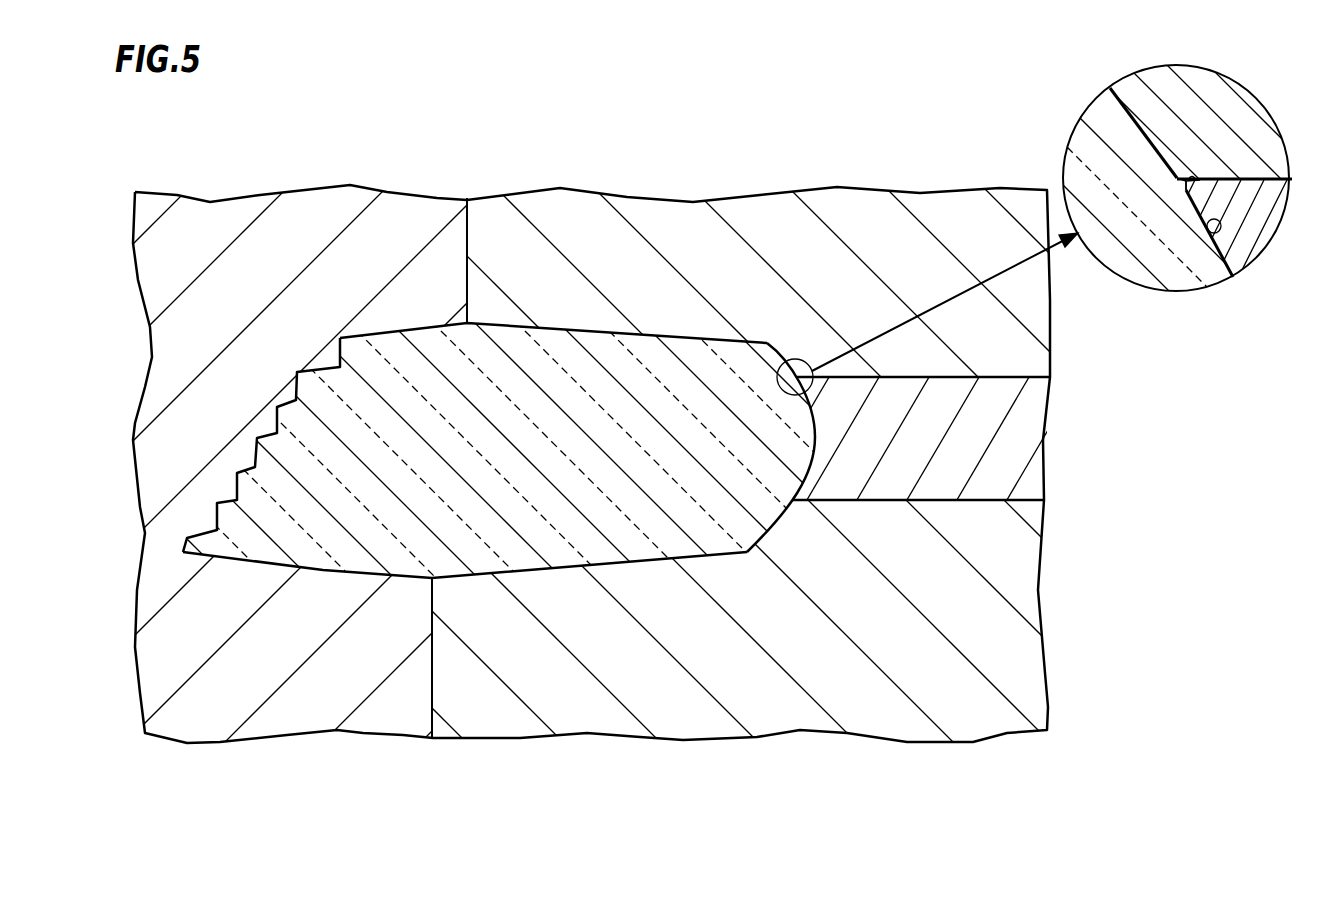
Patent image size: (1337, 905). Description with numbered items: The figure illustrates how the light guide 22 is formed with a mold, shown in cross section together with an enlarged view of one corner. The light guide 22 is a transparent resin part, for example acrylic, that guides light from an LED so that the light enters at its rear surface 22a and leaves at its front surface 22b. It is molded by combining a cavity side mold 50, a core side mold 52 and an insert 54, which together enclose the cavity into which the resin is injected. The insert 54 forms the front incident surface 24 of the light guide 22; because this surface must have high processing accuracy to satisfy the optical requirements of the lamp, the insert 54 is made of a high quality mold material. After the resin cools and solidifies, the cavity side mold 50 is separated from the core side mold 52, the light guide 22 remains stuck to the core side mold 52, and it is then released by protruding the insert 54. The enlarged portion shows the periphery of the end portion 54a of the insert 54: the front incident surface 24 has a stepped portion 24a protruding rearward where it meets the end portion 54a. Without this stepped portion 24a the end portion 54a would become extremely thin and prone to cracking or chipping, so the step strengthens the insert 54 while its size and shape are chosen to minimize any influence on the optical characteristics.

The light guide 22 is at (342, 537).
The rear surface 22a is at (777, 522).
The front surface 22b is at (250, 445).
The front incident surface 24 is at (810, 457).
The stepped portion 24a is at (1197, 177).
The cavity side mold 50 is at (315, 217).
The core side mold 52 is at (760, 217).
The insert 54 is at (1023, 448).
The end portion of the insert 54a is at (1200, 177).